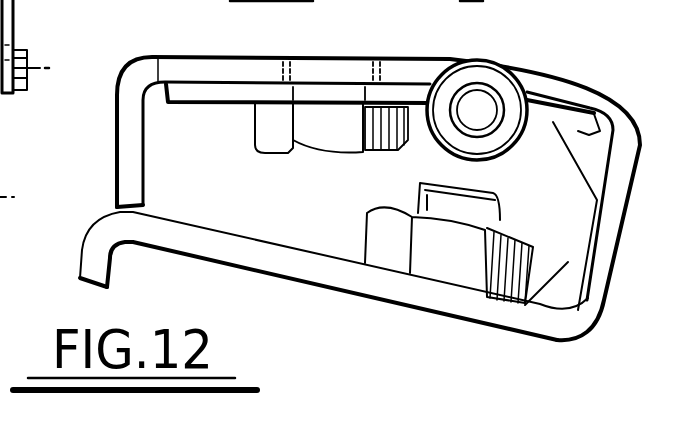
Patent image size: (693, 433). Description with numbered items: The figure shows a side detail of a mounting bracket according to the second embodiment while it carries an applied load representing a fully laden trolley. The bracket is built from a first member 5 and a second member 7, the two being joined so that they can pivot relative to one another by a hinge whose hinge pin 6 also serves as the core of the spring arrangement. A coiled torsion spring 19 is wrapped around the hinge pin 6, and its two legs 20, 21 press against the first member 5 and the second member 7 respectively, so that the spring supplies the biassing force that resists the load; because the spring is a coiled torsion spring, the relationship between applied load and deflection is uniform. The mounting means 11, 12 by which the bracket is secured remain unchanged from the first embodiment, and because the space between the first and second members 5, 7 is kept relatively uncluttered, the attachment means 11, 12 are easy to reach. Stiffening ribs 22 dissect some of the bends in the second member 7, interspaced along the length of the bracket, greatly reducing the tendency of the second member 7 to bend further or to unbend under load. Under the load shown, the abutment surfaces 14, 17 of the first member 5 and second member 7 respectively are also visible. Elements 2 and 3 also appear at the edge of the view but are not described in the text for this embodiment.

The mounting block 2 is at (22, 91).
The support wall 3 is at (27, 46).
The first member 5 is at (123, 87).
The hinge pin 6 is at (475, 110).
The second member 7 is at (281, 258).
The mounting means 11 is at (347, 120).
The mounting means 12 is at (450, 250).
The abutment surface 14 is at (117, 207).
The abutment surface 17 is at (138, 210).
The torsion spring 19 is at (473, 143).
The spring leg 20 is at (200, 90).
The spring leg 21 is at (578, 118).
The stiffening rib 22 is at (565, 272).